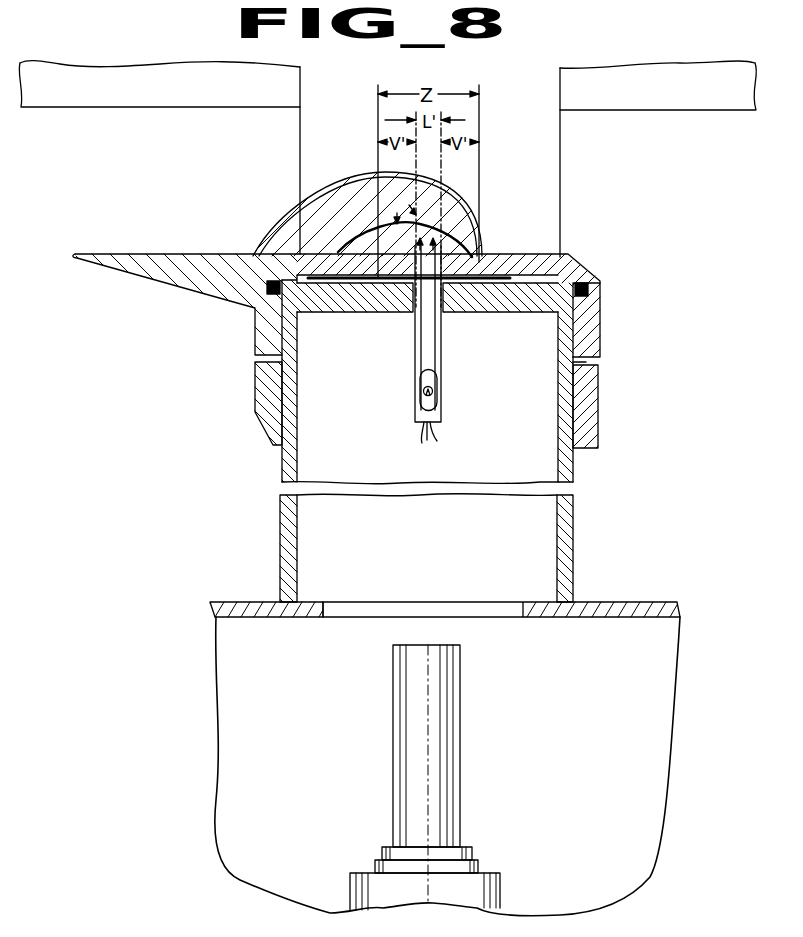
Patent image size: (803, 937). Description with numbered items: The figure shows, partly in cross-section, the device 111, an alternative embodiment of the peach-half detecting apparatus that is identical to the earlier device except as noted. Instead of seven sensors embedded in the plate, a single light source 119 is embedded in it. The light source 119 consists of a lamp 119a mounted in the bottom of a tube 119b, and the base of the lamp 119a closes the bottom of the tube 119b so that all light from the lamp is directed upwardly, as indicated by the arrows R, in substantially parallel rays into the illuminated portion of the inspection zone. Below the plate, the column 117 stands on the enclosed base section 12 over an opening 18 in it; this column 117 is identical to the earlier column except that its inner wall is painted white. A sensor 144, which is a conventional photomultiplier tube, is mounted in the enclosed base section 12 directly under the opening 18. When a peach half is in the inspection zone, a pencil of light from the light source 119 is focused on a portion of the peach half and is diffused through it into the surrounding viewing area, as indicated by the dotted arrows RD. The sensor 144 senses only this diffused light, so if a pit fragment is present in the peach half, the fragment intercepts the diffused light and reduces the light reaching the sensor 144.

The device 111 is at (634, 258).
The dotted arrows RD is at (481, 209).
The arrows R is at (420, 247).
The light source 119 is at (448, 344).
The lamp 119a is at (422, 377).
The tube 119b is at (437, 388).
The column 117 is at (573, 482).
The enclosed base section 12 is at (630, 607).
The opening 18 is at (330, 612).
The sensor 144 is at (455, 738).